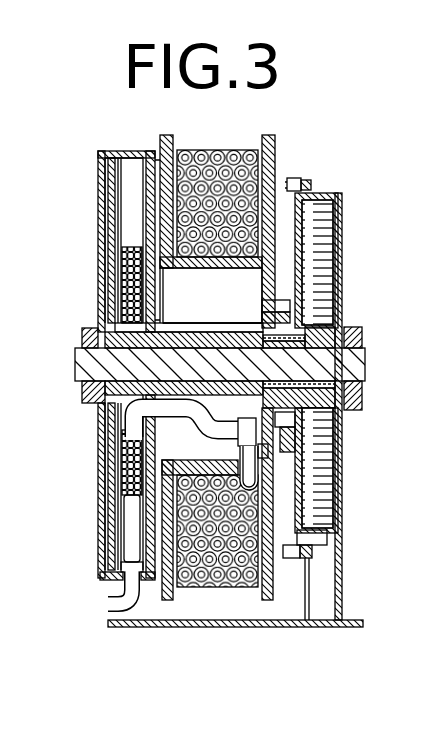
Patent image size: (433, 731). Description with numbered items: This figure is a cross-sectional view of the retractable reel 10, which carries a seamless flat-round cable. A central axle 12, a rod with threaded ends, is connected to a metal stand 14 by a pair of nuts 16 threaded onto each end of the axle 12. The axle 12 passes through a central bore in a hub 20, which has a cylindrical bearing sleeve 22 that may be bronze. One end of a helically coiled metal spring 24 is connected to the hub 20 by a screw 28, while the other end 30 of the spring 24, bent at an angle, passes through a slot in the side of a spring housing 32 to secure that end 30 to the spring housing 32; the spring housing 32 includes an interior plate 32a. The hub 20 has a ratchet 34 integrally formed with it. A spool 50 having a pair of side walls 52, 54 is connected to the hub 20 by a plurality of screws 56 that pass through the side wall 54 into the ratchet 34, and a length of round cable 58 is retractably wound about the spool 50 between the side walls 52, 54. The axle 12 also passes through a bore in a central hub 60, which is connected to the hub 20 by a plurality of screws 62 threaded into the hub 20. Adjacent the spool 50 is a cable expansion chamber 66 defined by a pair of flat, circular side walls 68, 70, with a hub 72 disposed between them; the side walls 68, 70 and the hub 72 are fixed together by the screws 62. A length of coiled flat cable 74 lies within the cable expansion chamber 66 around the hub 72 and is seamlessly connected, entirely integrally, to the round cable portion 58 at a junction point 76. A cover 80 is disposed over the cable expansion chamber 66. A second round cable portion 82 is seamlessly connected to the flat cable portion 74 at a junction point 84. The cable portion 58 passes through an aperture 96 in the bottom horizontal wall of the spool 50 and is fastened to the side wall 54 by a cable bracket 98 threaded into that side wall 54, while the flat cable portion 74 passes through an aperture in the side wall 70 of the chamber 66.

The retractable reel 10 is at (80, 260).
The central axle 12 is at (75, 352).
The metal stand 14 is at (352, 330).
The nuts 16 is at (86, 400).
The hub 20 is at (343, 410).
The cylindrical bearing sleeve 22 is at (320, 381).
The helically coiled metal spring 24 is at (318, 262).
The screw 28 is at (322, 323).
The other end of the spring 30 is at (320, 548).
The spring housing 32 is at (333, 245).
The interior plate 32a is at (295, 213).
The ratchet 34 is at (295, 440).
The spool 50 is at (243, 142).
The side wall 52 is at (166, 135).
The side wall 54 is at (278, 150).
The screws 56 is at (258, 312).
The round cable 58 is at (200, 150).
The central hub 60 is at (183, 323).
The screws 62 is at (243, 330).
The cable expansion chamber 66 is at (130, 180).
The side wall 68 is at (122, 207).
The side wall 70 is at (153, 175).
The hub 72 is at (124, 342).
The coiled flat cable 74 is at (133, 518).
The junction point 76 is at (203, 434).
The cover 80 is at (97, 185).
The second round cable portion 82 is at (108, 604).
The junction point 84 is at (118, 576).
The aperture 96 is at (232, 458).
The cable bracket 98 is at (268, 455).